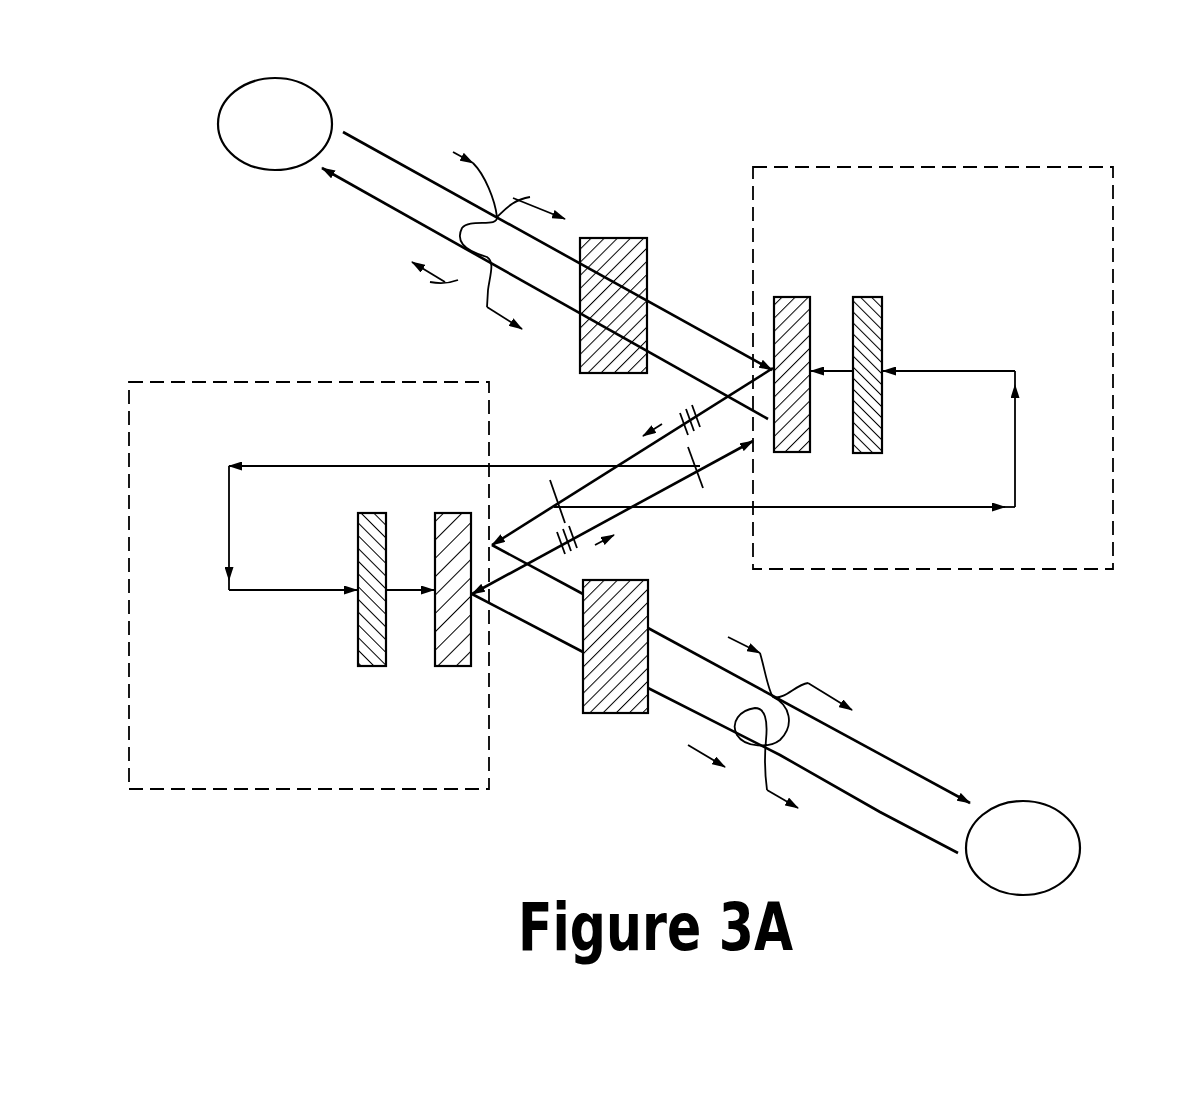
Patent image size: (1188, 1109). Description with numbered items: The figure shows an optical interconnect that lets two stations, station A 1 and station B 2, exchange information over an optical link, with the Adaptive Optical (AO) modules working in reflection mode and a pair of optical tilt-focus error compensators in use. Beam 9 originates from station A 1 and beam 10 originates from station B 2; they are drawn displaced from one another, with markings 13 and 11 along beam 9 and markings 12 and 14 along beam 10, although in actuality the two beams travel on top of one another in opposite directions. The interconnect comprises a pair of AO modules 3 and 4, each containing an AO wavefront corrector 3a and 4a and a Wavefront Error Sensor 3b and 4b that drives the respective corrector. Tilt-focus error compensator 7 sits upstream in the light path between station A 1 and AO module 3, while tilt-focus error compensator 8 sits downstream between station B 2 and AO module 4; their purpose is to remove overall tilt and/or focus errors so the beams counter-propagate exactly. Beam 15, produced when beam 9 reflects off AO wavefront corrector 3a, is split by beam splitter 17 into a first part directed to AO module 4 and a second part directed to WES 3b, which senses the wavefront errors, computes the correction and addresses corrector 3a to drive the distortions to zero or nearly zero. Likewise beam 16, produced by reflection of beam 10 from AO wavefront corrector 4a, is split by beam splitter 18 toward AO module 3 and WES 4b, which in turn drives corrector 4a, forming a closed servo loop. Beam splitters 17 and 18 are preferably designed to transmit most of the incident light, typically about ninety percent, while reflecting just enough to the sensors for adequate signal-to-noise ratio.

The transmitter/terminal A 1 is at (220, 112).
The receiver/terminal B 2 is at (1080, 838).
The Adaptive Optical module 3 is at (913, 167).
The AO wavefront corrector 3a is at (808, 297).
The Wavefront Error Sensor 3b is at (871, 297).
The Adaptive Optical module 4 is at (211, 789).
The AO wavefront corrector 4a is at (449, 666).
The Wavefront Error Sensor 4b is at (372, 666).
The optical tilt-focus error compensator 7 is at (615, 238).
The optical tilt-focus error compensator 8 is at (618, 713).
The beam 9 is at (365, 142).
The beam 10 is at (548, 634).
The polarization state of return beam 11 is at (488, 307).
The polarization state of forward beam 12 is at (800, 650).
The polarization state of forward beam 13 is at (518, 167).
The polarization state of return beam 14 is at (767, 790).
The beam 15 is at (677, 418).
The beam 16 is at (582, 553).
The beam splitter 17 is at (553, 500).
The beam splitter 18 is at (702, 471).